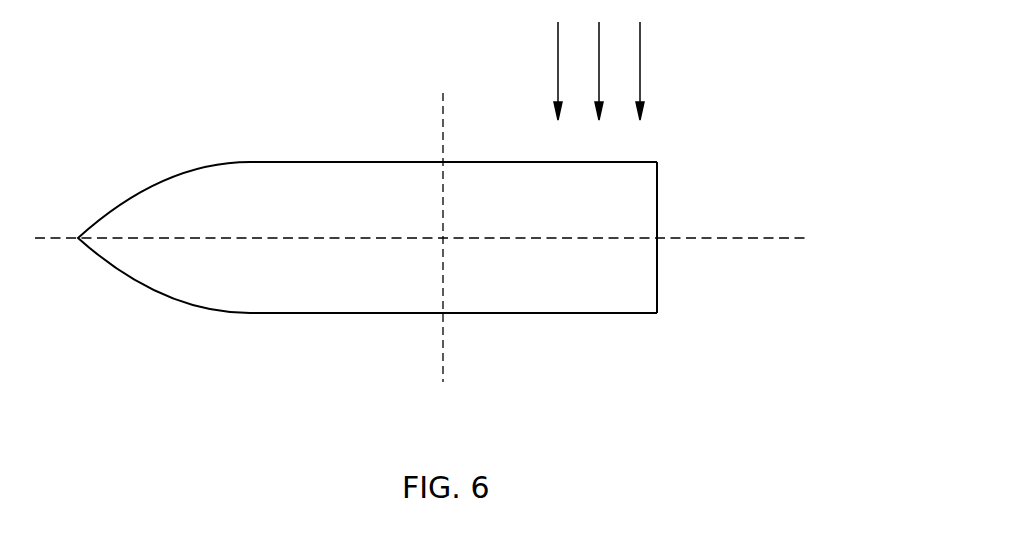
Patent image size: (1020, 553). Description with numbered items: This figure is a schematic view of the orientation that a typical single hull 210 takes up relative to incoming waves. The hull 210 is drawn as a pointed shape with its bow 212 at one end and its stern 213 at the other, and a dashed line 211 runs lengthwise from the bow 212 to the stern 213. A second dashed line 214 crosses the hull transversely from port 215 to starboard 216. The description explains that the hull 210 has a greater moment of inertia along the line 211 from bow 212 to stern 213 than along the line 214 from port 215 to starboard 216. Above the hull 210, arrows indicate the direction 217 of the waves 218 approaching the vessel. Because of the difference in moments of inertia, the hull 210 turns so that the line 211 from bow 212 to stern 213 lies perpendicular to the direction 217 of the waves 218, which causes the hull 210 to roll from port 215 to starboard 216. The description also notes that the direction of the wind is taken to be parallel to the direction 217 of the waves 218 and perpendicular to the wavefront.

The hull 210 is at (367, 261).
The line from bow to stern 211 is at (444, 241).
The bow 212 is at (164, 237).
The stern 213 is at (624, 237).
The line from port to starboard 214 is at (440, 252).
The port 215 is at (453, 295).
The starboard 216 is at (453, 193).
The direction of the waves 217 is at (598, 147).
The waves 218 is at (641, 82).